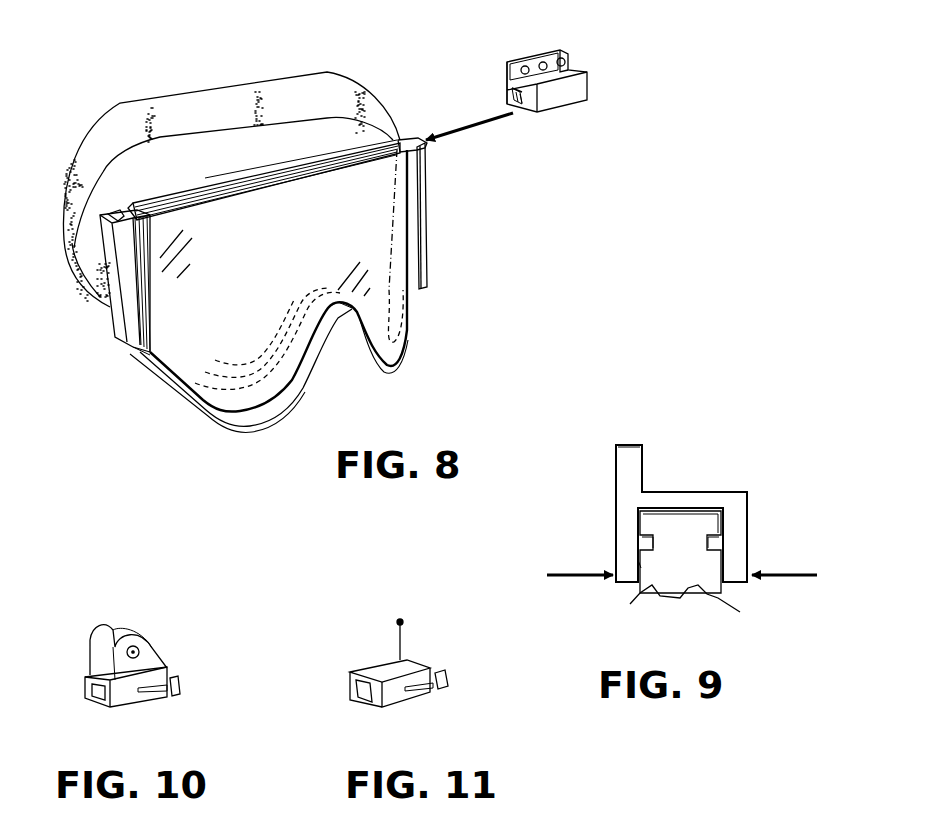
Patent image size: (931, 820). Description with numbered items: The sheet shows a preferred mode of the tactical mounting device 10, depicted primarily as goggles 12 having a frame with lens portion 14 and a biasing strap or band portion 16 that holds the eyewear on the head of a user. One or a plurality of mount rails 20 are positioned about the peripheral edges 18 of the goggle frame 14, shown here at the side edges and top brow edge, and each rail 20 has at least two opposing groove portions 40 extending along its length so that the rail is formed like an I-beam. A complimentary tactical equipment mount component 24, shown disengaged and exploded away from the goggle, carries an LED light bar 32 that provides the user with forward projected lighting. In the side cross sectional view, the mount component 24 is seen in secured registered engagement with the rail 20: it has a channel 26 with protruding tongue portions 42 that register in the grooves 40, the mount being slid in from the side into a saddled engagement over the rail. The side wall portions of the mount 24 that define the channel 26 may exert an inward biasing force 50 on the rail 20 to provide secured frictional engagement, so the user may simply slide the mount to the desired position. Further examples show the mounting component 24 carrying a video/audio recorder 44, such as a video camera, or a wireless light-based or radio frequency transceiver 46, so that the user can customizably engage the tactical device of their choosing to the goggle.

In FIG. 8, the device 10 is at (690, 183).
In FIG. 8, the goggles 12 is at (200, 400).
In FIG. 8, the goggle frame 14 is at (412, 325).
In FIG. 8, the strap or band portion 16 is at (215, 90).
In FIG. 8, the peripheral edges 18 is at (152, 370).
In FIG. 8, the mount rail 20 is at (185, 190).
In FIG. 9, the mount rail 20 is at (712, 585).
In FIG. 8, the equipment mount component 24 is at (588, 73).
In FIG. 9, the equipment mount component 24 is at (730, 495).
In FIG. 10, the equipment mount component 24 is at (120, 710).
In FIG. 11, the equipment mount component 24 is at (356, 676).
In FIG. 8, the channel 26 is at (512, 95).
In FIG. 9, the channel 26 is at (640, 568).
In FIG. 8, the LED light bar 32 is at (548, 52).
In FIG. 9, the LED light bar 32 is at (648, 455).
In FIG. 8, the groove portions 40 is at (133, 213).
In FIG. 9, the groove portions 40 is at (674, 566).
In FIG. 8, the tongue portions 42 is at (525, 105).
In FIG. 9, the tongue portions 42 is at (670, 558).
In FIG. 10, the video/audio recorder 44 is at (130, 642).
In FIG. 11, the transceiver 46 is at (402, 645).
In FIG. 9, the inward biasing force 50 is at (565, 577).